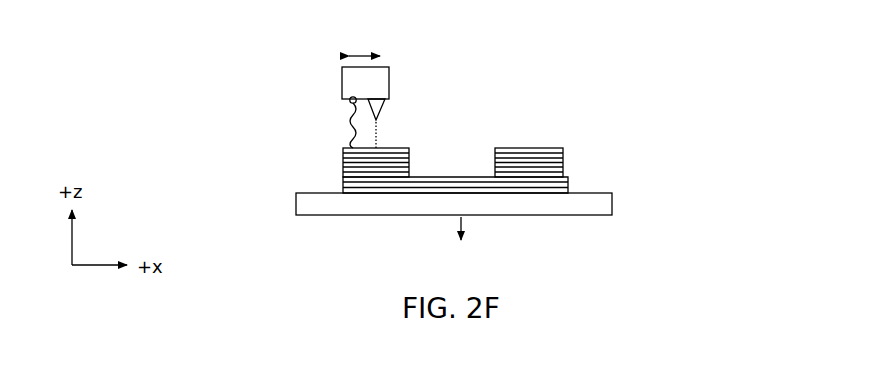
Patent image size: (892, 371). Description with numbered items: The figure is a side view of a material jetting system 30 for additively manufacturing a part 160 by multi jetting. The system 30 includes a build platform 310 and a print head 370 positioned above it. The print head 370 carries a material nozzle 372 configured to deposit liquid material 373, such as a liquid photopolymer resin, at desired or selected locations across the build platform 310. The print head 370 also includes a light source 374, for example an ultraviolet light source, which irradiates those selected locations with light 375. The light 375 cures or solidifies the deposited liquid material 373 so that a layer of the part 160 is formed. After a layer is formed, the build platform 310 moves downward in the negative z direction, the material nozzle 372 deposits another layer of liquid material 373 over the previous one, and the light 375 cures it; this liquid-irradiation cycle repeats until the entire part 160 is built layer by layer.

The system 30 is at (666, 58).
The part 160 is at (571, 159).
The build platform 310 is at (568, 215).
The print head 370 is at (339, 81).
The material nozzle 372 is at (390, 100).
The liquid material 373 is at (379, 142).
The light source 374 is at (351, 103).
The light 375 is at (351, 132).